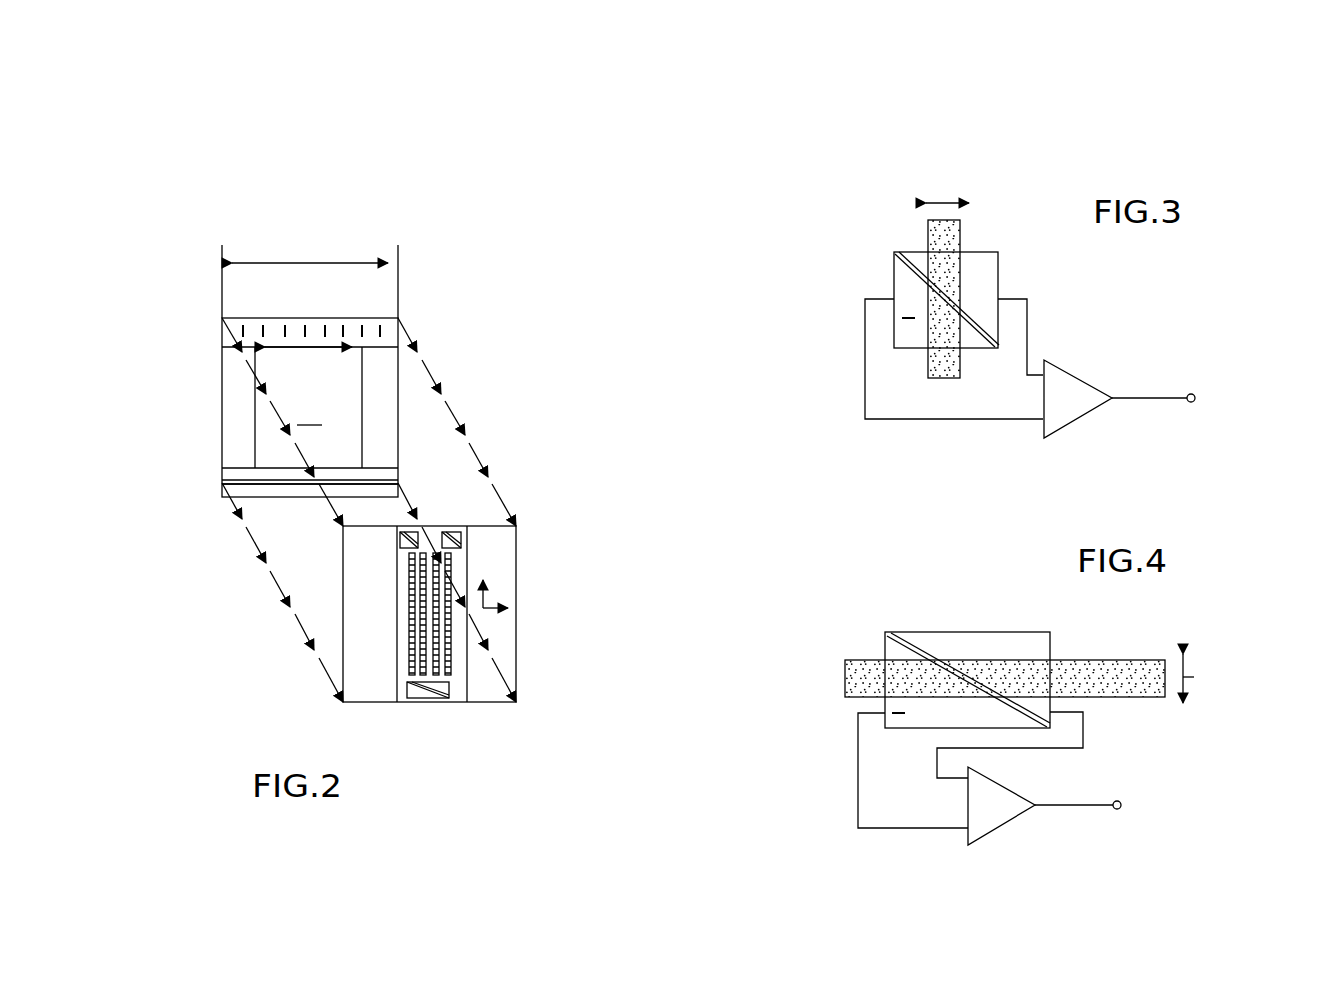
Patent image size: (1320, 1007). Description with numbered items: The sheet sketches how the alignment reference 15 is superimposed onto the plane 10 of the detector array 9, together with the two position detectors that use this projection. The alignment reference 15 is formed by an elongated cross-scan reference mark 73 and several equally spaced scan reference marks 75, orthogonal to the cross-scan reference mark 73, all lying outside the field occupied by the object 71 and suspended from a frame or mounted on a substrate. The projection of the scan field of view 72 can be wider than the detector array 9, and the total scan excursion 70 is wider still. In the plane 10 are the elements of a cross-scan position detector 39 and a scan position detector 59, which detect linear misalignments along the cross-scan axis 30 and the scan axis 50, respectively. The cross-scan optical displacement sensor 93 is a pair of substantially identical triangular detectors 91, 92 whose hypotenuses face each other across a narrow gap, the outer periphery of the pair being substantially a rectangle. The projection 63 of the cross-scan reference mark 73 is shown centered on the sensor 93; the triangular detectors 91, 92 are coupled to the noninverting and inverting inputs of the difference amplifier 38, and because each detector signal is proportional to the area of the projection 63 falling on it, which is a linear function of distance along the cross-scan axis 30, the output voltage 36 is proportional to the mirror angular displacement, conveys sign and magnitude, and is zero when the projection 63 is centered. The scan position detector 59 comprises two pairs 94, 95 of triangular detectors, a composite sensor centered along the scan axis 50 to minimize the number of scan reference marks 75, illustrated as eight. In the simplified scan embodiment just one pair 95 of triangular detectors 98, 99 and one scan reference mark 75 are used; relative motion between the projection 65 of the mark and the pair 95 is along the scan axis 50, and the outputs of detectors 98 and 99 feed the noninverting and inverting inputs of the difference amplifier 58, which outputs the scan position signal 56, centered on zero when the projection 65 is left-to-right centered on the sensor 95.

In FIG. 2, the total scan excursion 70 is at (335, 262).
In FIG. 2, the scan field of view 72 is at (283, 347).
In FIG. 2, the scan reference marks 75 is at (360, 325).
In FIG. 2, the object 71 is at (308, 400).
In FIG. 2, the alignment reference 15 is at (410, 421).
In FIG. 2, the cross-scan reference mark 73 is at (243, 486).
In FIG. 2, the plane 10 is at (333, 652).
In FIG. 2, the detector array 9 is at (408, 676).
In FIG. 2, the pair of triangular detectors 94 is at (396, 541).
In FIG. 2, the pair of triangular detectors 95 is at (466, 541).
In FIG. 3, the pair of triangular detectors 95 is at (904, 246).
In FIG. 2, the cross-scan optical displacement sensor 93 is at (454, 692).
In FIG. 4, the cross-scan optical displacement sensor 93 is at (916, 627).
In FIG. 2, the cross-scan axis 30 is at (487, 588).
In FIG. 4, the cross-scan axis 30 is at (1251, 683).
In FIG. 2, the scan axis 50 is at (498, 612).
In FIG. 3, the scan axis 50 is at (952, 206).
In FIG. 3, the projection of the reference mark 65 is at (956, 233).
In FIG. 3, the triangular detector 98 is at (993, 262).
In FIG. 3, the triangular detector 99 is at (908, 340).
In FIG. 3, the scan position detector 59 is at (1032, 301).
In FIG. 3, the difference amplifier 58 is at (1090, 415).
In FIG. 3, the scan position signal 56 is at (1162, 395).
In FIG. 4, the triangular detector 91 is at (963, 643).
In FIG. 4, the triangular detector 92 is at (905, 722).
In FIG. 4, the projection of reference mark 63 is at (1140, 696).
In FIG. 4, the cross-scan position detector 39 is at (1082, 718).
In FIG. 4, the difference amplifier 38 is at (1008, 810).
In FIG. 4, the voltage 36 is at (1070, 806).